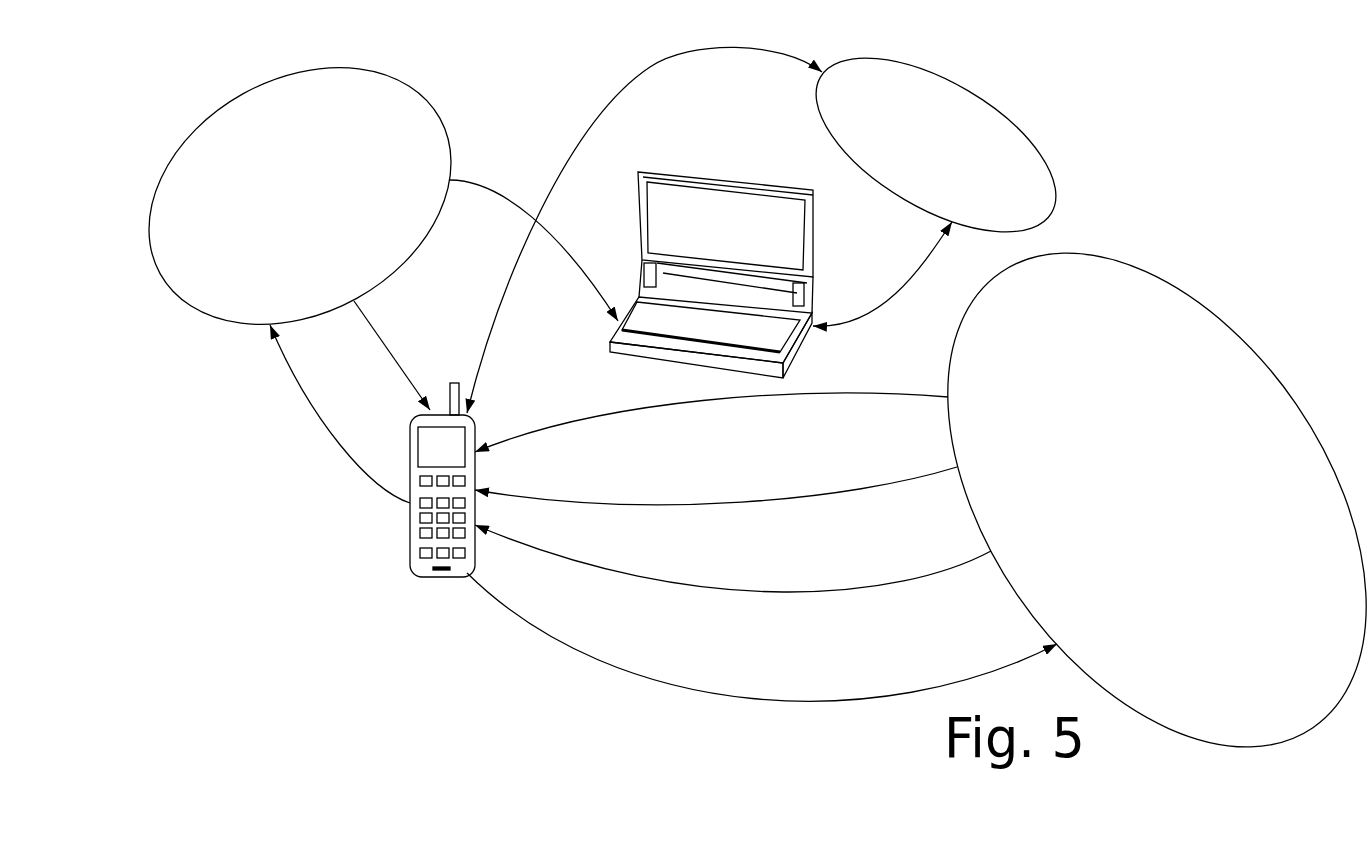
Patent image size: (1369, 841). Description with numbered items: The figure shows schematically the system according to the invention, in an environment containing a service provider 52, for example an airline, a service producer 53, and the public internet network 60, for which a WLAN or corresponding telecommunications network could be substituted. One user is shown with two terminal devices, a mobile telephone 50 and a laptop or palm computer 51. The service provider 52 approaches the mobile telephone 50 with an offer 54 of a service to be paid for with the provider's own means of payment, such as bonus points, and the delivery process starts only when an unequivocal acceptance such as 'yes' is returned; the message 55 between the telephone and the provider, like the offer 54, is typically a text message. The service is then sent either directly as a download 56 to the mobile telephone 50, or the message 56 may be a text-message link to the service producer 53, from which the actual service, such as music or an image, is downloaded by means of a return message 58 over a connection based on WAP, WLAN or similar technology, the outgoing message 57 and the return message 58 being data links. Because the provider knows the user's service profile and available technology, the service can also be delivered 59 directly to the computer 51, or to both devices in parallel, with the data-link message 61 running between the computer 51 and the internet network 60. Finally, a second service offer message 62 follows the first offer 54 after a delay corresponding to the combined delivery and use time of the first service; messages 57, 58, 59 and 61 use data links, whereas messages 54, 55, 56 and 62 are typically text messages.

The mobile telephone 50 is at (412, 563).
The laptop or palm computer 51 is at (770, 180).
The service provider 52 is at (1190, 298).
The service producer 53 is at (265, 82).
The offer 54 is at (638, 572).
The message 55 is at (577, 653).
The download 56 is at (750, 501).
The message 57 is at (322, 424).
The return message 58 is at (383, 342).
The service delivery 59 is at (524, 208).
The public internet network 60 is at (1027, 135).
The message 61 is at (652, 67).
The second service offer message 62 is at (605, 418).